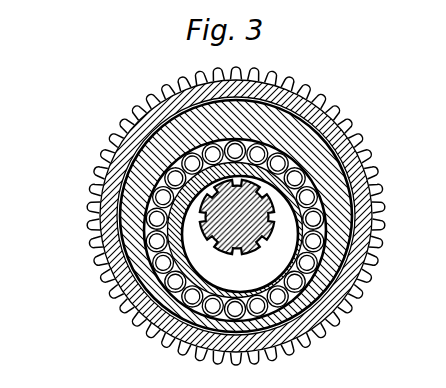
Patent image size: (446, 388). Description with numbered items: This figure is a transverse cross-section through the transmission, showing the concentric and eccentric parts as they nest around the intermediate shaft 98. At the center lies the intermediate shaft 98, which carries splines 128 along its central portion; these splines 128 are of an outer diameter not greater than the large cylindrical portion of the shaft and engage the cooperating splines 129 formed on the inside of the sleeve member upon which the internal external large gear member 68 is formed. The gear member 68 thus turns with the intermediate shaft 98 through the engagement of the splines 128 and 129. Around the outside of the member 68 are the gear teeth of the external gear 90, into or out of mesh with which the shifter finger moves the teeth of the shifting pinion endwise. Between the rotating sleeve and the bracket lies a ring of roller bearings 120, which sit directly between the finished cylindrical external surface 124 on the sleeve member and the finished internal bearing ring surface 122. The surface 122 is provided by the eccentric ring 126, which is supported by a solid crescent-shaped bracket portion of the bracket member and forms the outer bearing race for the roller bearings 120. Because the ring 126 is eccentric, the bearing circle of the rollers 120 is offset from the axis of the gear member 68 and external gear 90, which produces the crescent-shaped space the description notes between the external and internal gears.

The external gear 90 is at (214, 215).
The internal bearing ring surface 122 is at (293, 79).
The internal external gear member 68 is at (118, 301).
The cooperating splines 129 is at (108, 222).
The roller bearings 120 is at (291, 230).
The eccentric ring 126 is at (302, 277).
The splines 128 is at (300, 222).
The finished cylindrical external surface 124 is at (229, 284).
The intermediate shaft 98 is at (188, 214).